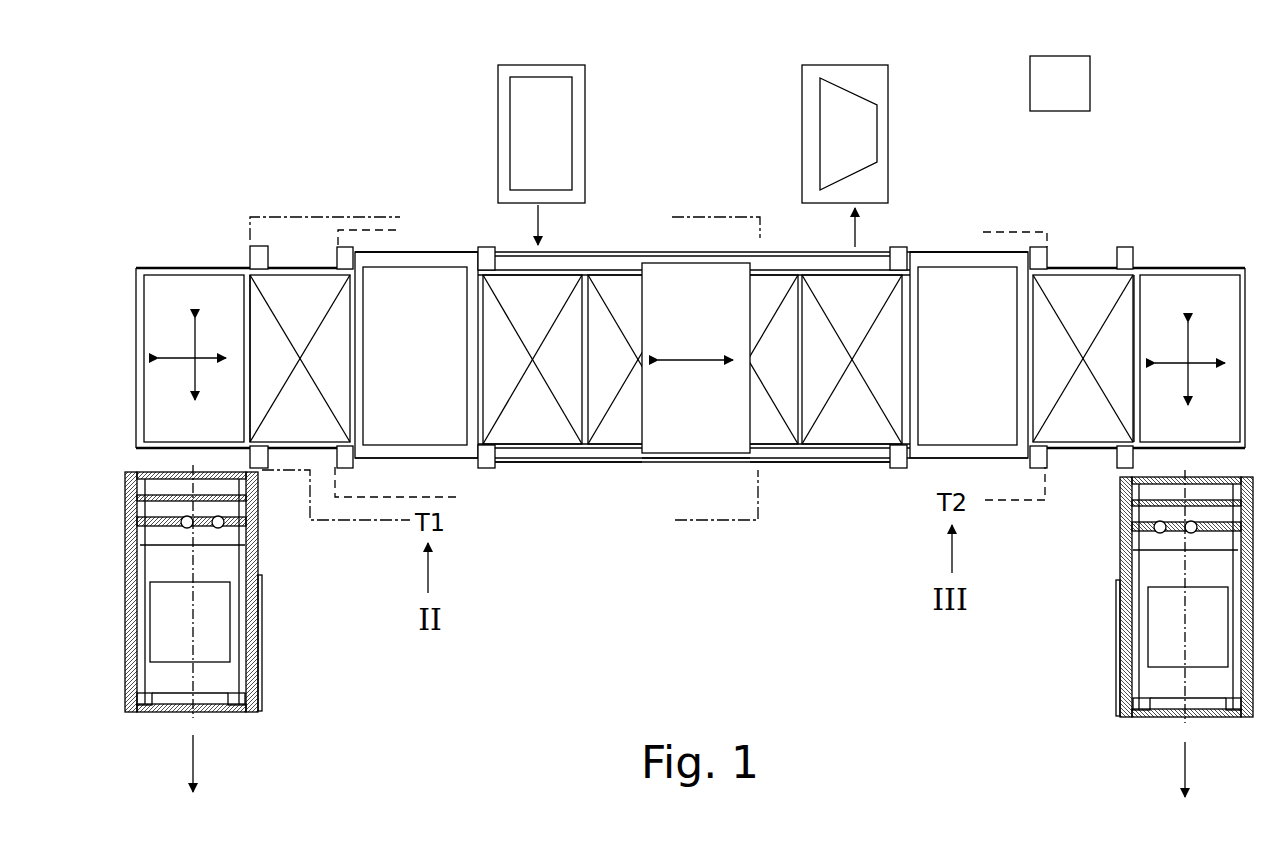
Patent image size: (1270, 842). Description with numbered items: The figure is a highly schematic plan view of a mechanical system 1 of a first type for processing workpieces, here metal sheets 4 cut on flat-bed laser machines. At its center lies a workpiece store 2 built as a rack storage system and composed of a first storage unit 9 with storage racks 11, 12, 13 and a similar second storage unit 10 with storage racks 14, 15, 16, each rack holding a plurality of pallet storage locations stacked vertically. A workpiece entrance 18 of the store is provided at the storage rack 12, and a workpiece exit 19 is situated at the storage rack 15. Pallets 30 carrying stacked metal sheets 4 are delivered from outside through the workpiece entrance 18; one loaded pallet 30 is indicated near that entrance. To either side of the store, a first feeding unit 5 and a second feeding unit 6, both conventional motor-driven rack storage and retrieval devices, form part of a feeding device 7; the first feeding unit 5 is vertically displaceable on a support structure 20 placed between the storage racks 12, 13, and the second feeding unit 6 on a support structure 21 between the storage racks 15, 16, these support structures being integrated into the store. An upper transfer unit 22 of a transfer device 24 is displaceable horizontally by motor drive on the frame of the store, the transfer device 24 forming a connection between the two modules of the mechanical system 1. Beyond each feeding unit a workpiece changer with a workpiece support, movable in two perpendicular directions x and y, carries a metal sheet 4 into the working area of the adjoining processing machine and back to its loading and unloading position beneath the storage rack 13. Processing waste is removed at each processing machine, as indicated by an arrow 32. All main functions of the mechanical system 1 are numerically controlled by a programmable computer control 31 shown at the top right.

The mechanical system 1 is at (236, 95).
The workpiece store 2 is at (644, 219).
The metal sheet 4 is at (551, 150).
The first feeding unit 5 is at (416, 366).
The second feeding unit 6 is at (981, 370).
The feeding device 7 is at (416, 430).
The first storage unit 9 is at (556, 490).
The second storage unit 10 is at (822, 482).
The storage rack 11 is at (592, 370).
The storage rack 12 is at (485, 370).
The storage rack 13 is at (311, 366).
The storage rack 14 is at (760, 370).
The storage rack 15 is at (867, 370).
The storage rack 16 is at (1037, 370).
The workpiece entrance 18 is at (492, 236).
The workpiece exit 19 is at (870, 240).
The support structure 20 is at (418, 258).
The support structure 21 is at (965, 258).
The upper transfer unit 22 is at (678, 318).
The transfer device 24 is at (656, 476).
The pallet 30 is at (585, 107).
The programmable computer control 31 is at (1043, 95).
The arrow 32 is at (193, 757).